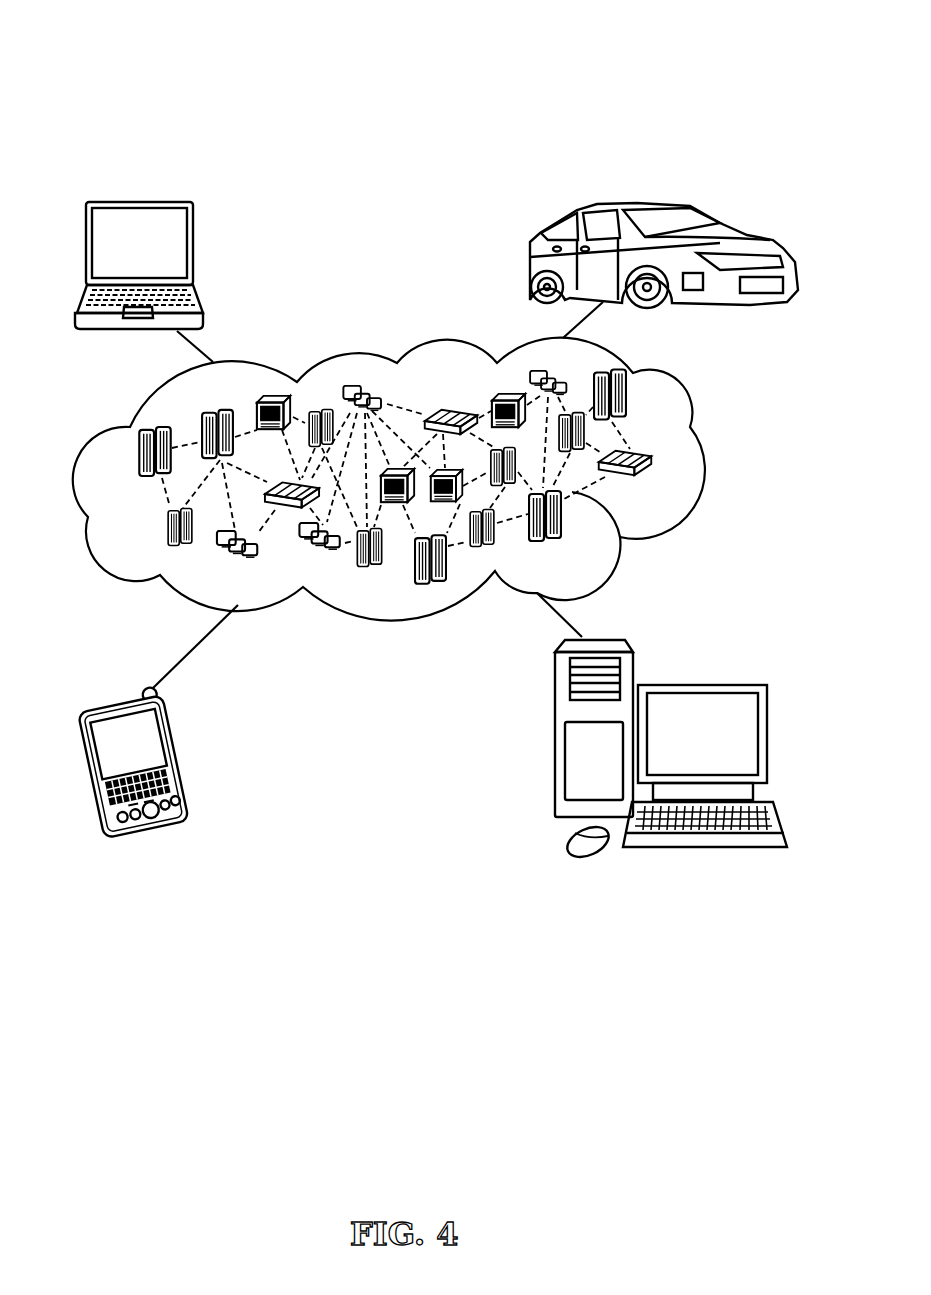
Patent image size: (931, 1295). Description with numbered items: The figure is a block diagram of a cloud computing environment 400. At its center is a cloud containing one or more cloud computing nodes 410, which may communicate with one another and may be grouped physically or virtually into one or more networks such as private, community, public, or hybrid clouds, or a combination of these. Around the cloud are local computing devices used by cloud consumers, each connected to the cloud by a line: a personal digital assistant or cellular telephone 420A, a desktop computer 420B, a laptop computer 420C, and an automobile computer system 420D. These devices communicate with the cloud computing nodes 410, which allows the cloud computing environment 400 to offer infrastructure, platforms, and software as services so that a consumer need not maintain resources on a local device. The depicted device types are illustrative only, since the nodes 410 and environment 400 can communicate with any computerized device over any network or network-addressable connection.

The cloud computing environment 400 is at (327, 55).
The cloud computing nodes 410 is at (662, 485).
The personal digital assistant or cellular telephone 420A is at (185, 757).
The desktop computer 420B is at (700, 682).
The laptop computer 420C is at (193, 250).
The automobile computer system 420D is at (530, 266).